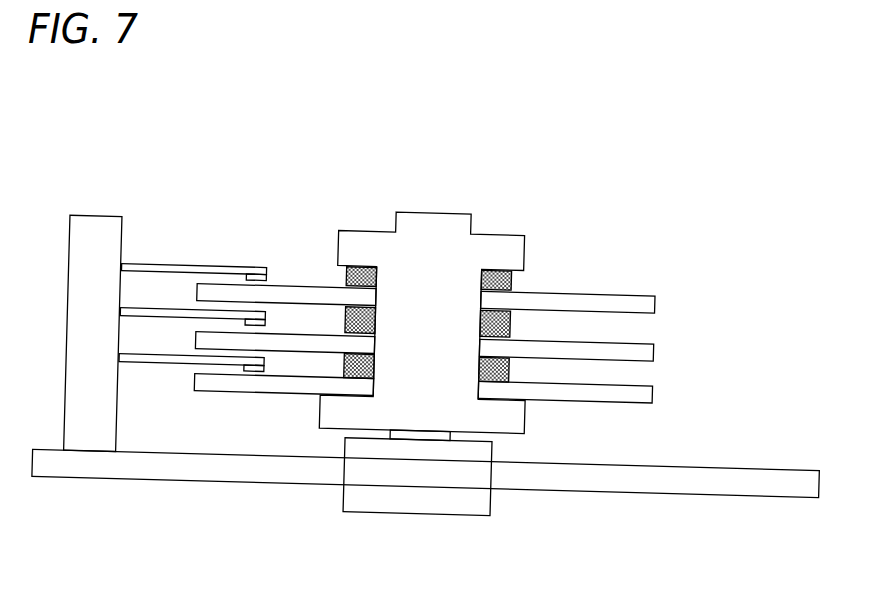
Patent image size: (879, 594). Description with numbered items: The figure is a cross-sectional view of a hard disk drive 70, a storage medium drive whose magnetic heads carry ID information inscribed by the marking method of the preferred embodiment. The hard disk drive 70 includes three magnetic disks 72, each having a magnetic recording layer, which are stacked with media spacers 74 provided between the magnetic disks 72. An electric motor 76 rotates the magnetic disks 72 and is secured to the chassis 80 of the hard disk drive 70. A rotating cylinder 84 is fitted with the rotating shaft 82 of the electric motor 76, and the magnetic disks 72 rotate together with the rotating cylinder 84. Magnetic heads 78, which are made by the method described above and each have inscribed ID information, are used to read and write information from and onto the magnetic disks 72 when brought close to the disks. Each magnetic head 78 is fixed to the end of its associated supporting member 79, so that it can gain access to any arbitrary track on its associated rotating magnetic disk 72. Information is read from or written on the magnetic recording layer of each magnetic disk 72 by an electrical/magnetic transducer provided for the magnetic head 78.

The hard disk drive 70 is at (268, 170).
The magnetic disk 72 is at (655, 307).
The media spacer 74 is at (513, 282).
The electric motor 76 is at (450, 520).
The magnetic head 78 is at (267, 275).
The supporting member 79 is at (193, 265).
The chassis 80 is at (133, 475).
The rotating shaft 82 is at (523, 432).
The rotating cylinder 84 is at (407, 253).